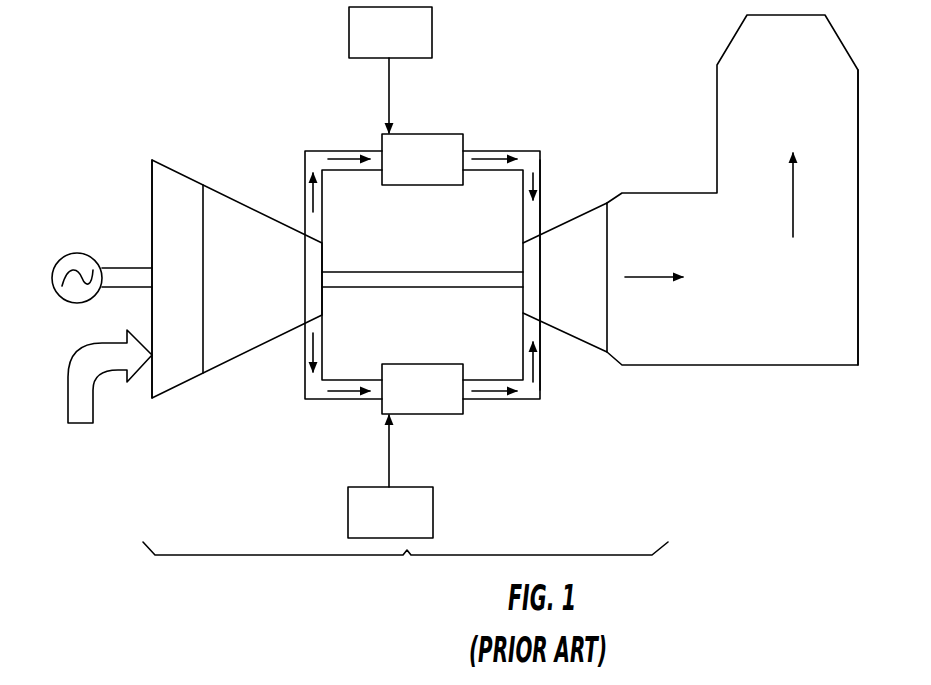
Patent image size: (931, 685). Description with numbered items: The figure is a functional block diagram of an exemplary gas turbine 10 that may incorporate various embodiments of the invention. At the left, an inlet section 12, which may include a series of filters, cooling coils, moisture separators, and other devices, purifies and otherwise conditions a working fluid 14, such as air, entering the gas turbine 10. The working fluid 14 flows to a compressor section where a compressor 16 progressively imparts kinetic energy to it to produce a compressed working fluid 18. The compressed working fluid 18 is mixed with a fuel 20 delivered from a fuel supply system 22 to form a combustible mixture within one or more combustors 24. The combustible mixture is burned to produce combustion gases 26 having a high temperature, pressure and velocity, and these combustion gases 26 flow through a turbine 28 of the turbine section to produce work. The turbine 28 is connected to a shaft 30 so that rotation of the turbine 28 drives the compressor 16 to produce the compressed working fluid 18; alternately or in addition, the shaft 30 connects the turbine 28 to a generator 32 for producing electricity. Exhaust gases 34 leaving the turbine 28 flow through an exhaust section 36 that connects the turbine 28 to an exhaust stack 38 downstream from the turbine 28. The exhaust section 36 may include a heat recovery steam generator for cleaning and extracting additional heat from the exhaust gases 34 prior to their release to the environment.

The gas turbine 10 is at (405, 566).
The inlet section 12 is at (194, 285).
The working fluid 14 is at (78, 424).
The compressor 16 is at (268, 285).
The compressed working fluid 18 is at (305, 197).
The fuel 20 is at (389, 88).
The fuel supply system 22 is at (400, 48).
The combustor 24 is at (432, 170).
The combustion gases 26 is at (540, 183).
The turbine 28 is at (570, 283).
The shaft 30 is at (418, 287).
The generator 32 is at (78, 253).
The exhaust gases 34 is at (645, 277).
The exhaust section 36 is at (757, 301).
The exhaust stack 38 is at (858, 103).